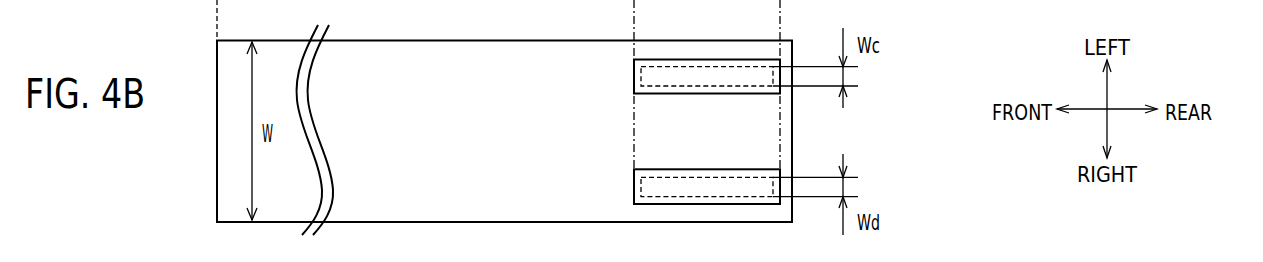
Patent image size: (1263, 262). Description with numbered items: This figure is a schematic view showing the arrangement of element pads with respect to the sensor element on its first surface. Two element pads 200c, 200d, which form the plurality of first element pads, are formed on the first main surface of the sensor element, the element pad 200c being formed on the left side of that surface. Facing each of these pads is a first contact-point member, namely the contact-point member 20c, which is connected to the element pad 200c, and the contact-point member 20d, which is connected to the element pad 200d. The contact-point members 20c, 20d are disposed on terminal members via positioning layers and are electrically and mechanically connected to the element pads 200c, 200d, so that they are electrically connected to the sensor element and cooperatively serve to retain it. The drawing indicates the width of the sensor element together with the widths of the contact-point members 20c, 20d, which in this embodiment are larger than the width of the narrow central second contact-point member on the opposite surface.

The element pad 200c is at (634, 66).
The contact-point member 20c is at (651, 77).
The element pad 200d is at (634, 177).
The contact-point member 20d is at (651, 188).